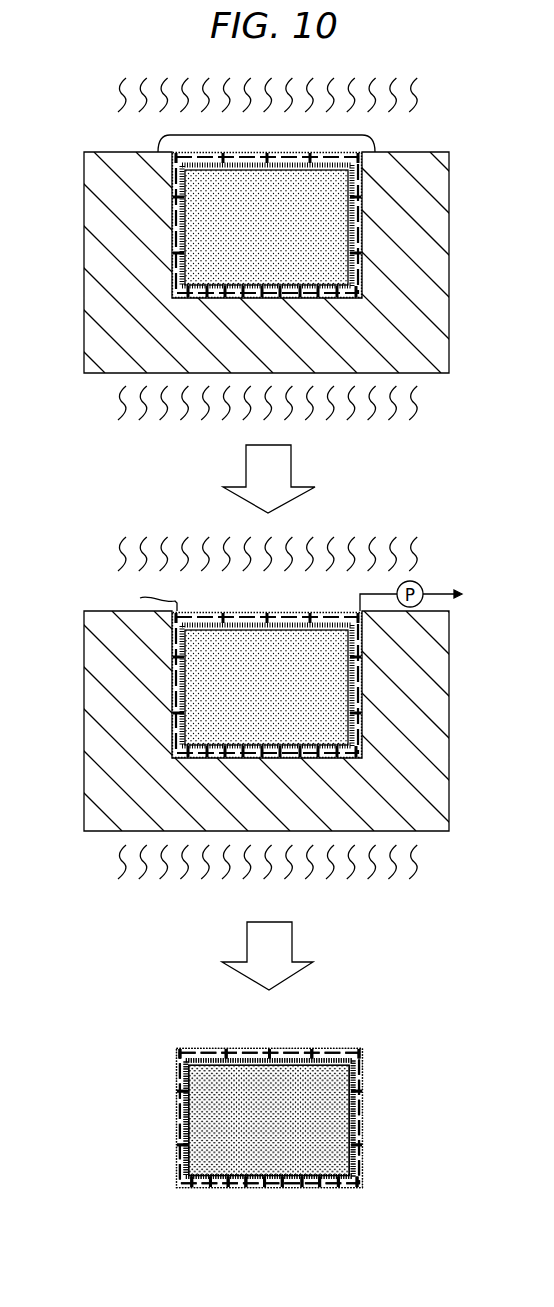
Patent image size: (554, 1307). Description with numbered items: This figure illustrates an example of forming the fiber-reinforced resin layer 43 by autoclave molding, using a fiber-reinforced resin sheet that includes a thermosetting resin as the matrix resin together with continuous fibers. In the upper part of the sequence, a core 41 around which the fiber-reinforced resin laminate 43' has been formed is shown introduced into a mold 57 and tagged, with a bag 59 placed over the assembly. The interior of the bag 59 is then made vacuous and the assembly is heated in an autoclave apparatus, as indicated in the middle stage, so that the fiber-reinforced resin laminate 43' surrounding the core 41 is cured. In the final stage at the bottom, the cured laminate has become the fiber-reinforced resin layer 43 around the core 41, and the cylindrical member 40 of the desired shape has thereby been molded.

The cylindrical member 40 is at (346, 1044).
The core 41 is at (173, 232).
The fiber-reinforced resin layer 43 is at (305, 1117).
The fiber-reinforced resin laminate 43' is at (344, 455).
The mold 57 is at (448, 212).
The bag 59 is at (366, 146).